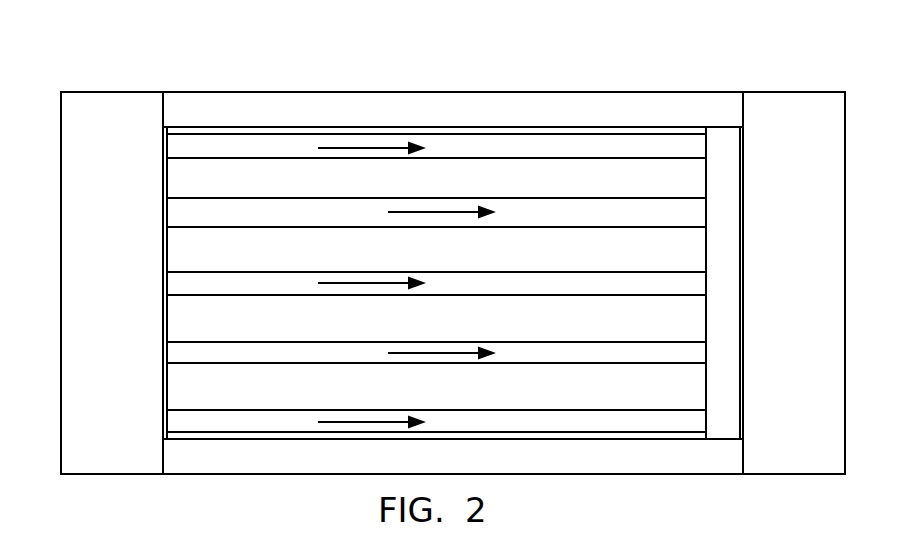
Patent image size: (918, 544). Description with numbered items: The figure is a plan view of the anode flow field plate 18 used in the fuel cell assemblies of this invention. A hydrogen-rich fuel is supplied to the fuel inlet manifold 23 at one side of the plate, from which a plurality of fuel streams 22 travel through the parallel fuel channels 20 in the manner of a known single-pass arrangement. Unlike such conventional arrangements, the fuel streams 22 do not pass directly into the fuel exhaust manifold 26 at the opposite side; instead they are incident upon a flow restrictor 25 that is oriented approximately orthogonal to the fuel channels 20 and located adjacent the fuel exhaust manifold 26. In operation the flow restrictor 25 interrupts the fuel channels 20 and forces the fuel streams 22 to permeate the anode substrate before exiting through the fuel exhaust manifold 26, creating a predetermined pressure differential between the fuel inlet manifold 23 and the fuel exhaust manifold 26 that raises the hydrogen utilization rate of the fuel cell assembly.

The anode flow field plate 18 is at (453, 266).
The fuel channels 20 is at (242, 198).
The fuel streams 22 is at (338, 149).
The fuel inlet manifold 23 is at (113, 135).
The flow restrictor 25 is at (723, 258).
The fuel exhaust manifold 26 is at (798, 119).